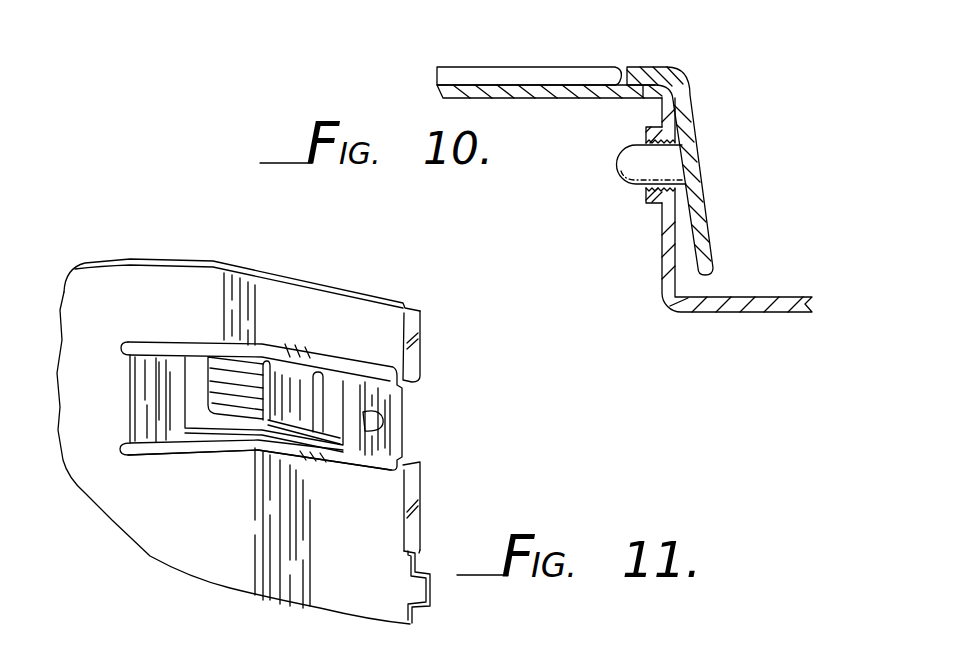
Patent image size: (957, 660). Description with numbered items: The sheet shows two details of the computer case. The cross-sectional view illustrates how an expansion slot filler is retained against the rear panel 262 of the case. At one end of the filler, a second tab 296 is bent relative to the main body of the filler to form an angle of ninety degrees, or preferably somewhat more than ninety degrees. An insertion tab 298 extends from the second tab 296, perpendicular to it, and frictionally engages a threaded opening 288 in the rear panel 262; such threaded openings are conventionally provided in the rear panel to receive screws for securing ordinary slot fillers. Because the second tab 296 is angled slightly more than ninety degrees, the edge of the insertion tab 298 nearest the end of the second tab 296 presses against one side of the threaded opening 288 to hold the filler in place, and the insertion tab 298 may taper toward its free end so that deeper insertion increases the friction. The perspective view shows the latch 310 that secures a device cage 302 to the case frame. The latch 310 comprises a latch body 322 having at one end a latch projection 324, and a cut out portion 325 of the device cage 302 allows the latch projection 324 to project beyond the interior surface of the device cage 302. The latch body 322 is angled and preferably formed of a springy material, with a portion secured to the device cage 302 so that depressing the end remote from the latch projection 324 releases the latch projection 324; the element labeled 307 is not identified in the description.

In FIG. 10, the rear panel 262 is at (727, 313).
In FIG. 10, the threaded opening 288 is at (647, 194).
In FIG. 10, the second tab 296 is at (693, 123).
In FIG. 10, the insertion tab 298 is at (616, 163).
In FIG. 11, the device cage 302 is at (268, 291).
In FIG. 11, the spring tab 307 is at (215, 388).
In FIG. 11, the latch 310 is at (241, 461).
In FIG. 11, the latch body 322 is at (136, 342).
In FIG. 11, the latch projection 324 is at (381, 421).
In FIG. 11, the cut out portion 325 is at (411, 378).